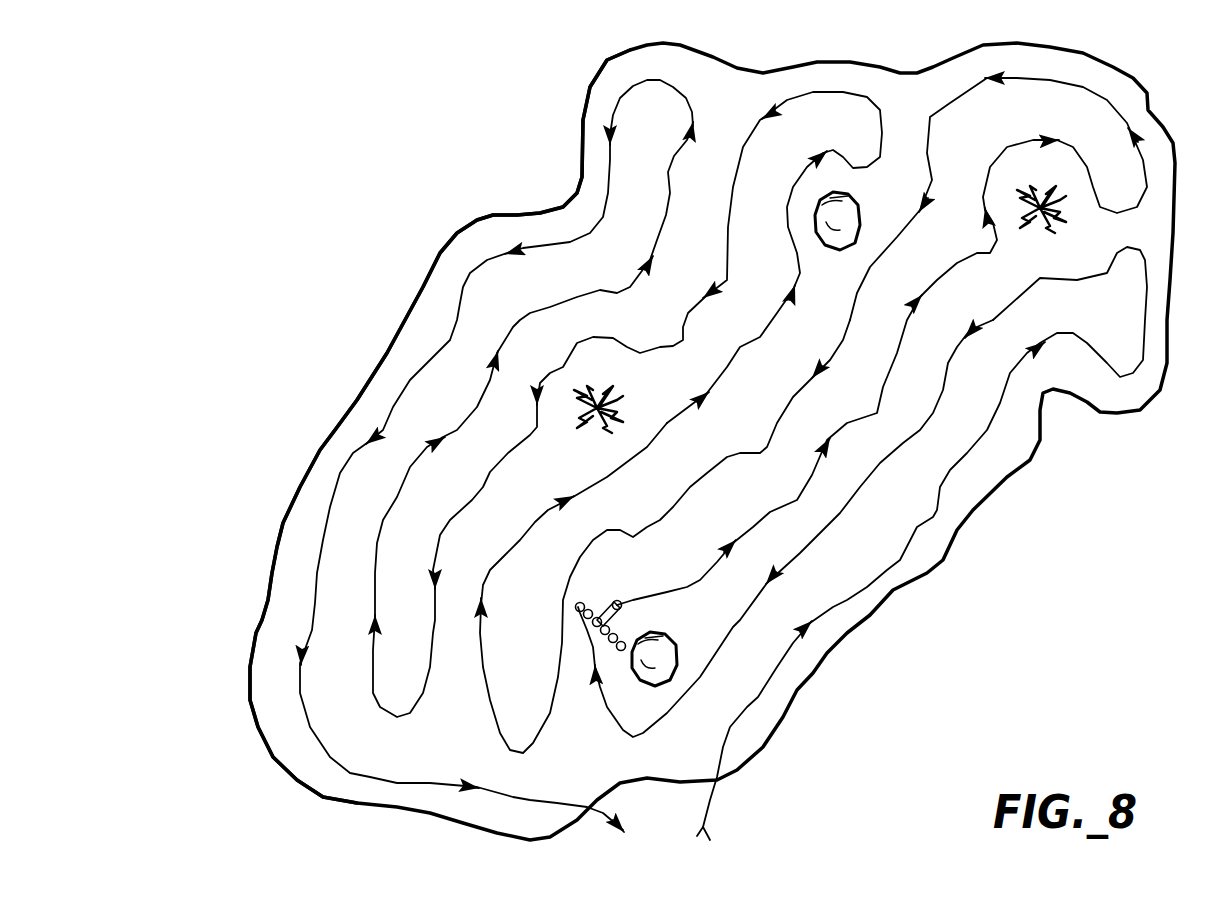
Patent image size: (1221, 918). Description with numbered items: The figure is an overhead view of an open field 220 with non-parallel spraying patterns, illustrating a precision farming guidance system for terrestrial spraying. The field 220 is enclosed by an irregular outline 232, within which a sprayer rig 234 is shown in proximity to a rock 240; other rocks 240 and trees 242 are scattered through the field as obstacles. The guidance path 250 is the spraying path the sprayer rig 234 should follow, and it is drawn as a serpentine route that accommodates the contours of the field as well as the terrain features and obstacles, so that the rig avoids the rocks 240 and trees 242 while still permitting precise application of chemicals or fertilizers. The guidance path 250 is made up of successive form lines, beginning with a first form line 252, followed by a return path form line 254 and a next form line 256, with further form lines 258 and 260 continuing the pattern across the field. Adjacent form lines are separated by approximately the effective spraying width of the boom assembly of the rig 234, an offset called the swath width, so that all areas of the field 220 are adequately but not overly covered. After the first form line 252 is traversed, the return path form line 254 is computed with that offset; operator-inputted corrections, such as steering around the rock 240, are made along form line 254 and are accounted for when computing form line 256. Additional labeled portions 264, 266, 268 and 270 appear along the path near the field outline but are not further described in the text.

The open field 220 is at (232, 736).
The boundary of work area 232 is at (735, 441).
The sprayer rig 234 is at (620, 604).
The rock 240 is at (777, 428).
The trees 242 is at (824, 328).
The guidance path 250 is at (922, 545).
The first form line 252 is at (1042, 458).
The form line 254 is at (785, 528).
The form line 256 is at (882, 341).
The guidance path segment 258 is at (665, 535).
The guidance path segment 260 is at (591, 455).
The path segment marker 264 is at (802, 722).
The path segment marker 266 is at (835, 668).
The path segment marker 268 is at (890, 626).
The path segment marker 270 is at (938, 578).